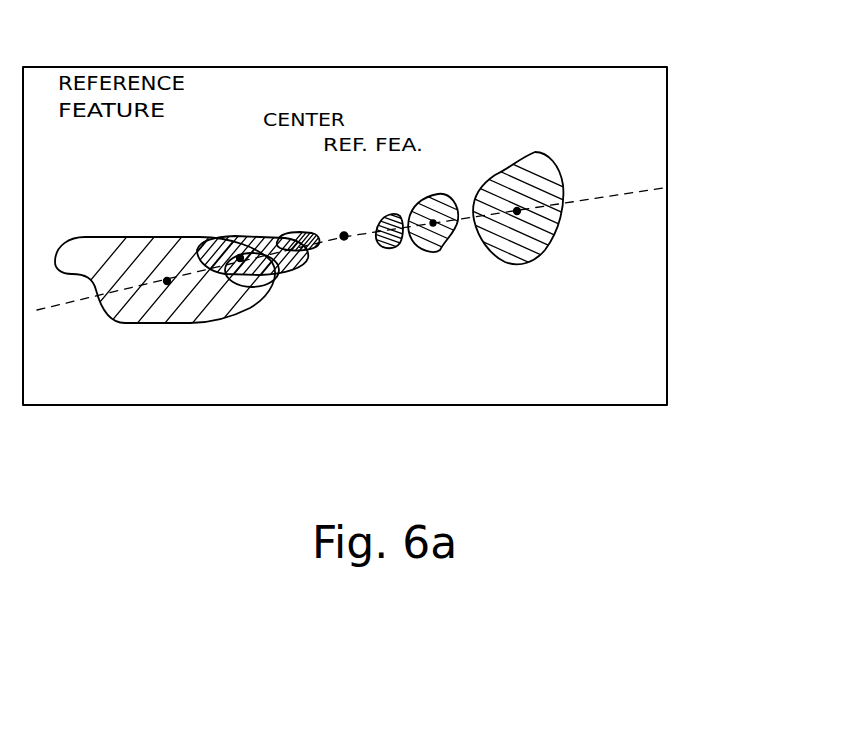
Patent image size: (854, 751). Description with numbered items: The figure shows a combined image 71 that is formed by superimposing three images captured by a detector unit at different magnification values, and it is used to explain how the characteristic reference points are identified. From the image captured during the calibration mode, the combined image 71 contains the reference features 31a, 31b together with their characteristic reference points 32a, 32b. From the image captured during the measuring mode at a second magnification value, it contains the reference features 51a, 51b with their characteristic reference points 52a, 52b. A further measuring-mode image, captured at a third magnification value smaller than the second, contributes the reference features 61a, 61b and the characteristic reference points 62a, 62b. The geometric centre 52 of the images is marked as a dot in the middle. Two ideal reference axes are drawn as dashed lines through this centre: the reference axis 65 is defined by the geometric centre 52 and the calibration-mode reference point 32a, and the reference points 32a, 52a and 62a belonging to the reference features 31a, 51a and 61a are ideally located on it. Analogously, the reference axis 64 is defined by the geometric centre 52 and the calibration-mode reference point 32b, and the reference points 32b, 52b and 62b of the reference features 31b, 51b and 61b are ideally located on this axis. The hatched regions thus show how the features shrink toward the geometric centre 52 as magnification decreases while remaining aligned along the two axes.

The reference feature 31a is at (548, 156).
The reference feature 31b is at (97, 236).
The characteristic reference point 32a is at (517, 211).
The characteristic reference point 32b is at (167, 281).
The reference feature 51a is at (450, 194).
The reference feature 51b is at (222, 236).
The geometric centre 52 is at (344, 236).
The characteristic reference point 52a is at (433, 223).
The characteristic reference point 52b is at (262, 285).
The reference feature 61a is at (393, 215).
The reference feature 61b is at (300, 240).
The characteristic reference point 62a is at (397, 250).
The characteristic reference point 62b is at (300, 250).
The reference axis 64 is at (87, 298).
The reference axis 65 is at (570, 203).
The combined image 71 is at (640, 404).